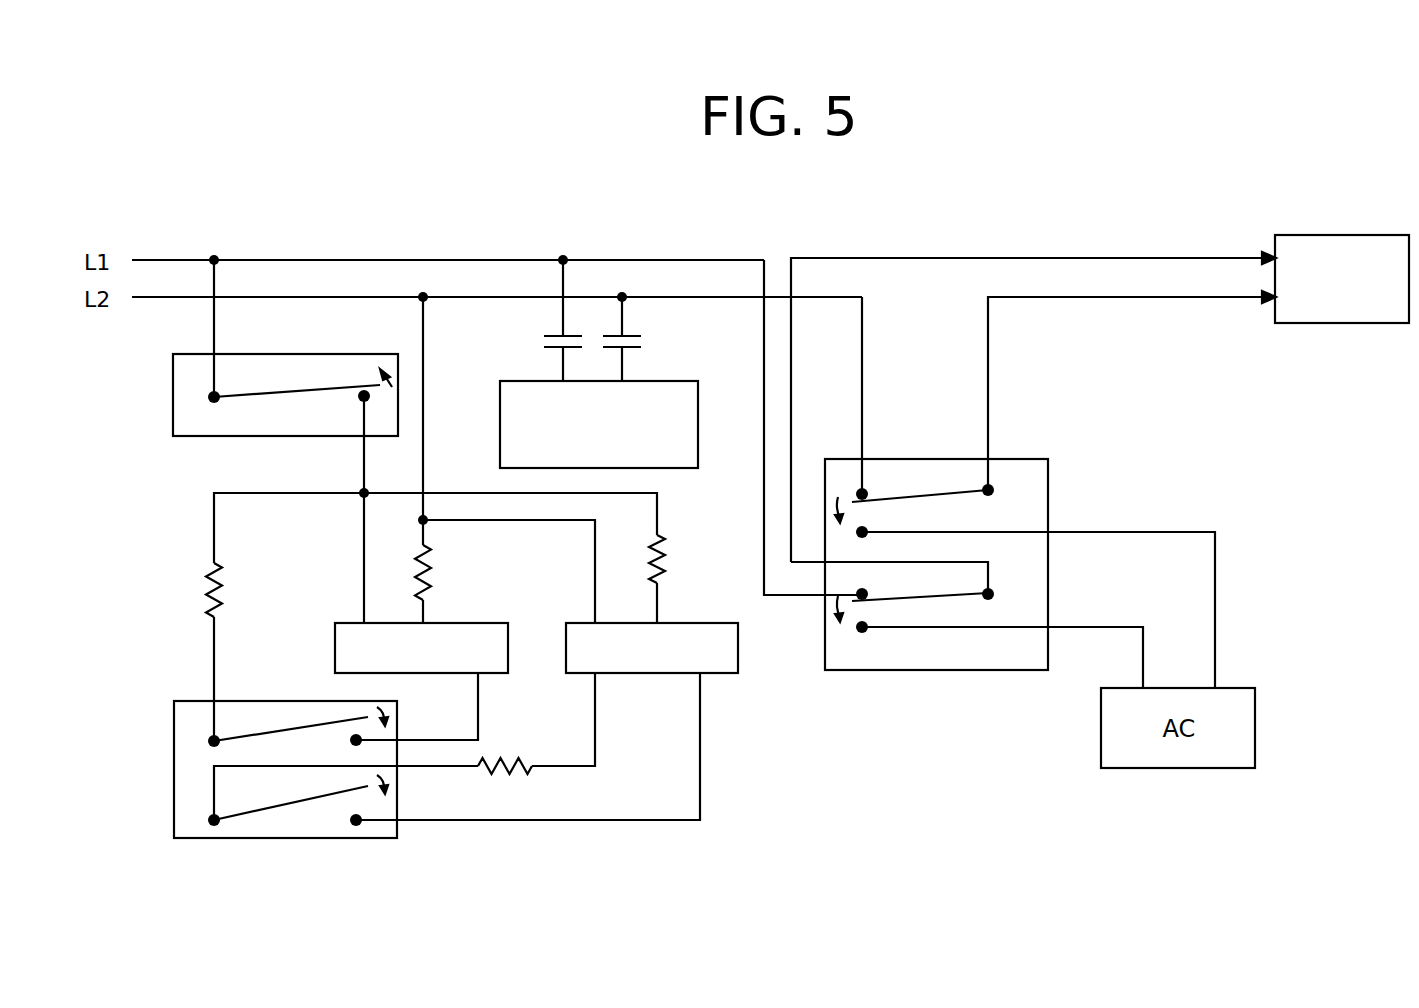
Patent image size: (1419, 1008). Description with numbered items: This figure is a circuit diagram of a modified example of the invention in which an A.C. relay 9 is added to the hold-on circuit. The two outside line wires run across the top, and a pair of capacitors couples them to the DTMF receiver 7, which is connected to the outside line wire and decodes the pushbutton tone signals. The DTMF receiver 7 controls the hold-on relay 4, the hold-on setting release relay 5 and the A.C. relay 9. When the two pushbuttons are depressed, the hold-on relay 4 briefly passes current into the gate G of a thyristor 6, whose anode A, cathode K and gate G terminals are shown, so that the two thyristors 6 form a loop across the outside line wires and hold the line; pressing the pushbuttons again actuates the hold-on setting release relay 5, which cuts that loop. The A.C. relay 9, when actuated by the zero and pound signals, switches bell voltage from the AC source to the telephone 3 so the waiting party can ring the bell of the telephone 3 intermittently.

The telephone 3 is at (1333, 243).
The hold-on relay 4 is at (185, 818).
The hold-on setting release relay 5 is at (190, 405).
The thyristor 6 is at (493, 663).
The DTMF receiver 7 is at (683, 394).
The A.C. relay 9 is at (1035, 486).